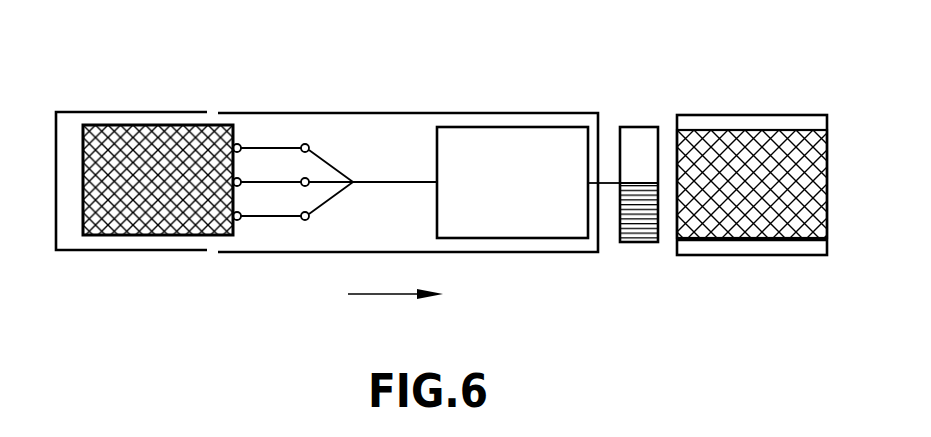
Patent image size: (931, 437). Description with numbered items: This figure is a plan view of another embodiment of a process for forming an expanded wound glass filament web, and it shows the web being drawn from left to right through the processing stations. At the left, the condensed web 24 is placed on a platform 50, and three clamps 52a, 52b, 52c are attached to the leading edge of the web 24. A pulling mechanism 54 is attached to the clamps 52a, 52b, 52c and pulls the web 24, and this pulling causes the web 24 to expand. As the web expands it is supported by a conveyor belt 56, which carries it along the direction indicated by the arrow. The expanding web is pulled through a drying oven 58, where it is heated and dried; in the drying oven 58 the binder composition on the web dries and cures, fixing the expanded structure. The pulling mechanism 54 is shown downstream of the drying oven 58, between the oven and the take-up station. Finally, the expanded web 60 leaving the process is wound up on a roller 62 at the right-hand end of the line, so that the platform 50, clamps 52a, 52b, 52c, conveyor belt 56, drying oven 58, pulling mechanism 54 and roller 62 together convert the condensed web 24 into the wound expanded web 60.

The condensed web 24 is at (138, 133).
The platform 50 is at (130, 243).
The clamp 52a is at (238, 142).
The clamp 52b is at (240, 186).
The clamp 52c is at (233, 218).
The pulling mechanism 54 is at (640, 140).
The conveyor belt 56 is at (397, 130).
The drying oven 58 is at (535, 199).
The expanded web 60 is at (795, 147).
The roller 62 is at (780, 245).